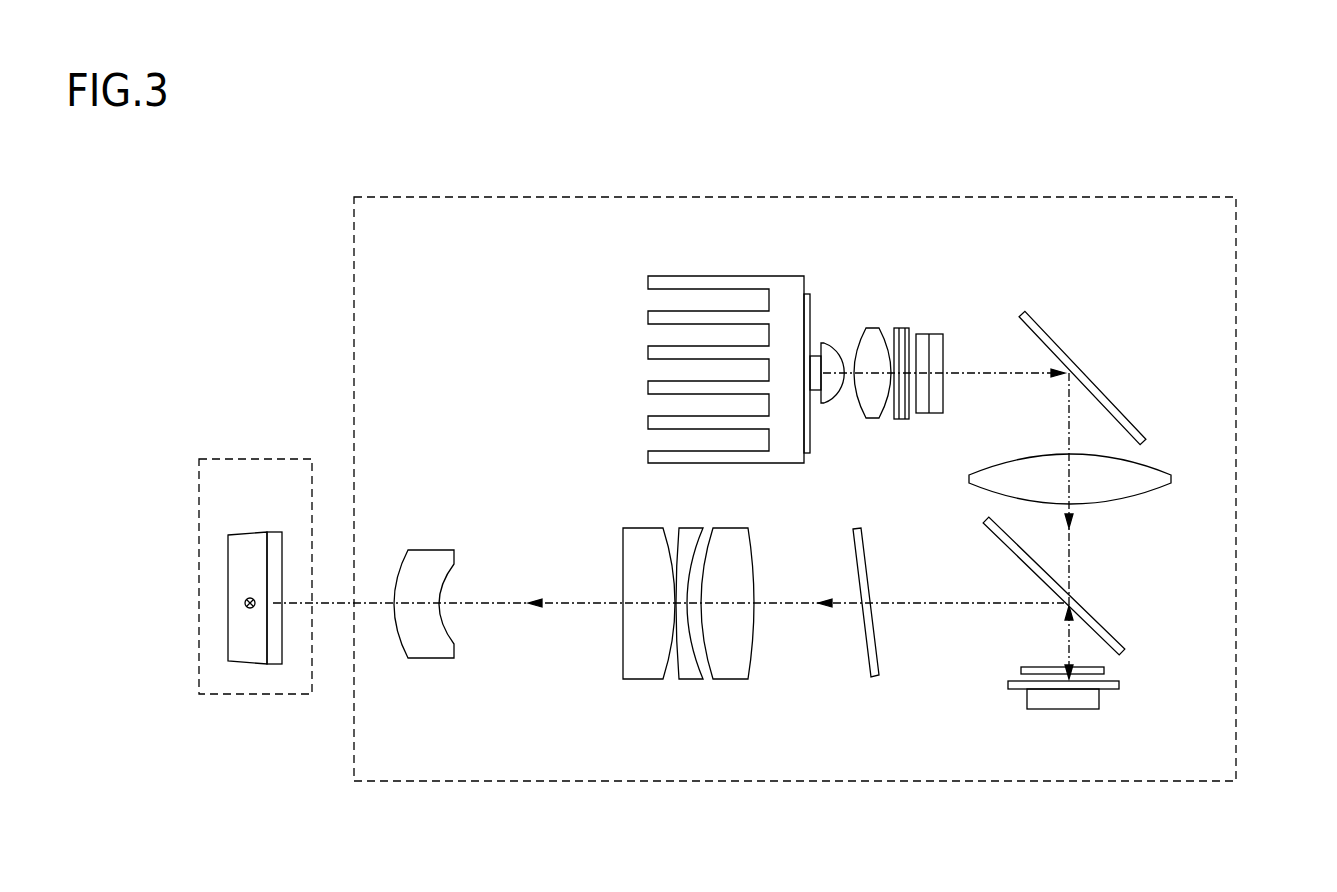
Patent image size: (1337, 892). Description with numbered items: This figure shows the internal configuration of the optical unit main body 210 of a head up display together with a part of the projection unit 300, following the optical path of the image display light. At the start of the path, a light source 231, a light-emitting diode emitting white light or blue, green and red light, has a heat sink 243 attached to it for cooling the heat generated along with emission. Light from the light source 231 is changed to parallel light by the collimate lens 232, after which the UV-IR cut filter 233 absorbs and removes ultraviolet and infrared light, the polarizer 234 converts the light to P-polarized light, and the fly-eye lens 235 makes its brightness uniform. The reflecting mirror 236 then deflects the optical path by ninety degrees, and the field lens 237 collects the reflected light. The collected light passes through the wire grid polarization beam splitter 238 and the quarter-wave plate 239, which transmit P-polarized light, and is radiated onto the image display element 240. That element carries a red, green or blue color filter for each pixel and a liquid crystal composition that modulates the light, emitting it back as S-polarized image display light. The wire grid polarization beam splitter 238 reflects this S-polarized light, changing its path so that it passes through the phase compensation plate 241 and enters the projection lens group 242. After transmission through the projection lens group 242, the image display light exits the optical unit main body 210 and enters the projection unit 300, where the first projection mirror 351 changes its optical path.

The optical unit main body 210 is at (1237, 228).
The projection unit 300 is at (272, 430).
The first projection mirror 351 is at (243, 540).
The heat sink 243 is at (783, 285).
The light source 231 is at (813, 356).
The collimate lens 232 is at (872, 335).
The UV-IR cut filter 233 is at (897, 326).
The polarizer 234 is at (906, 326).
The fly-eye lens 235 is at (932, 340).
The reflecting mirror 236 is at (1127, 417).
The field lens 237 is at (1160, 472).
The wire grid polarization beam splitter 238 is at (1108, 638).
The quarter-wave plate 239 is at (1105, 669).
The image display element 240 is at (1085, 704).
The phase compensation plate 241 is at (868, 654).
The projection lens group 242 is at (757, 693).